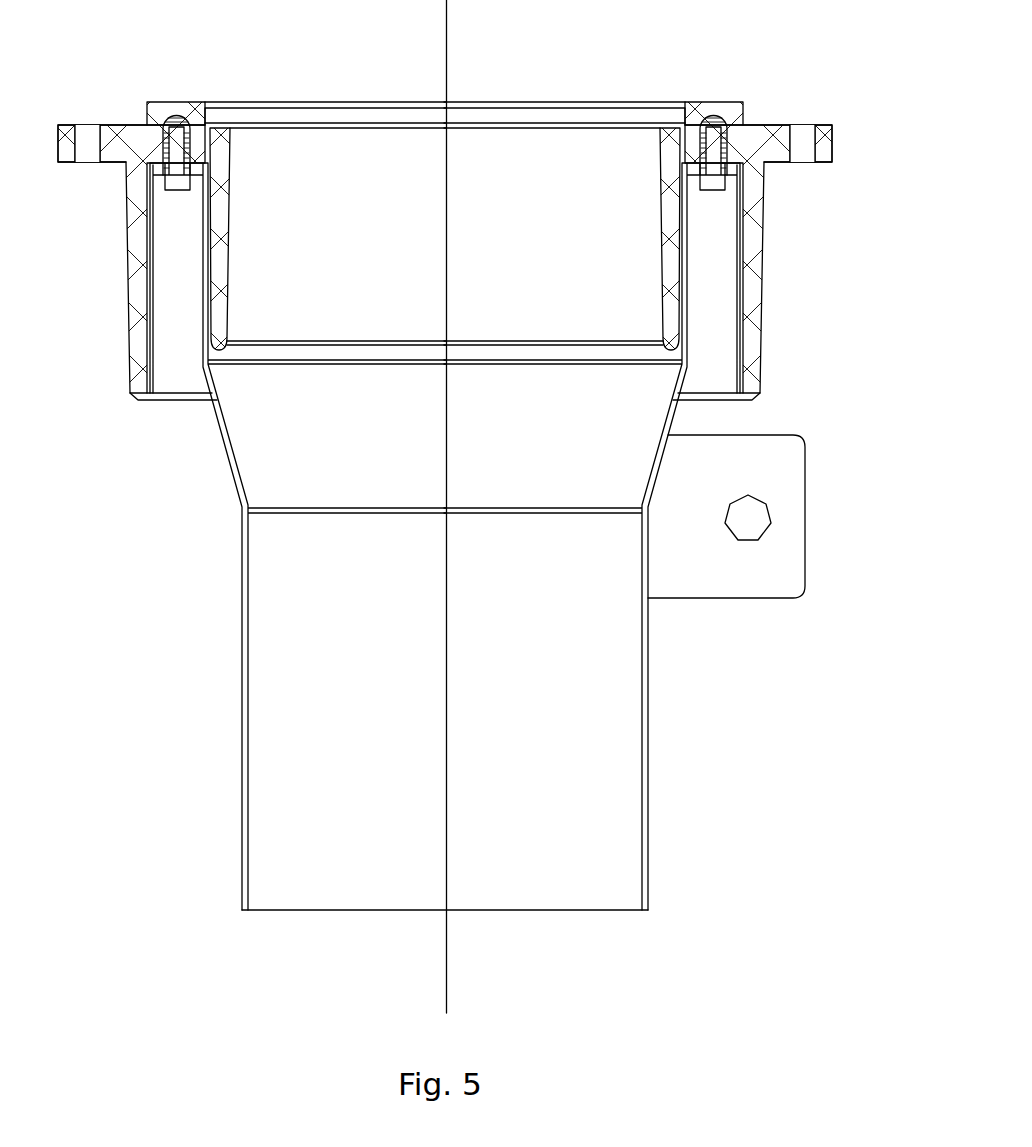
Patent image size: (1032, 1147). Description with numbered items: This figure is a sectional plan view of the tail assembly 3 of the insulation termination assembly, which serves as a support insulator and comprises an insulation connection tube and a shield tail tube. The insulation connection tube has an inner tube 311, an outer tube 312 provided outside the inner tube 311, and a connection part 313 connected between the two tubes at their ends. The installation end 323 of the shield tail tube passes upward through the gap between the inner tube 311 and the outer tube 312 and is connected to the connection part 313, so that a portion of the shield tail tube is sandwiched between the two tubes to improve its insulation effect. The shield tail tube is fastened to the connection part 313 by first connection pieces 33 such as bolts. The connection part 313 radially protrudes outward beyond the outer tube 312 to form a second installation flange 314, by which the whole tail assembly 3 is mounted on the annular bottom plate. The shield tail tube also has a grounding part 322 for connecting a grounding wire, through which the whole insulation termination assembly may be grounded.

The tail assembly 3 is at (205, 687).
The first connection piece 33 is at (176, 160).
The inner tube 311 is at (673, 323).
The outer tube 312 is at (756, 297).
The connection part 313 is at (723, 108).
The second installation flange 314 is at (825, 152).
The grounding part 322 is at (740, 582).
The installation end 323 is at (688, 238).